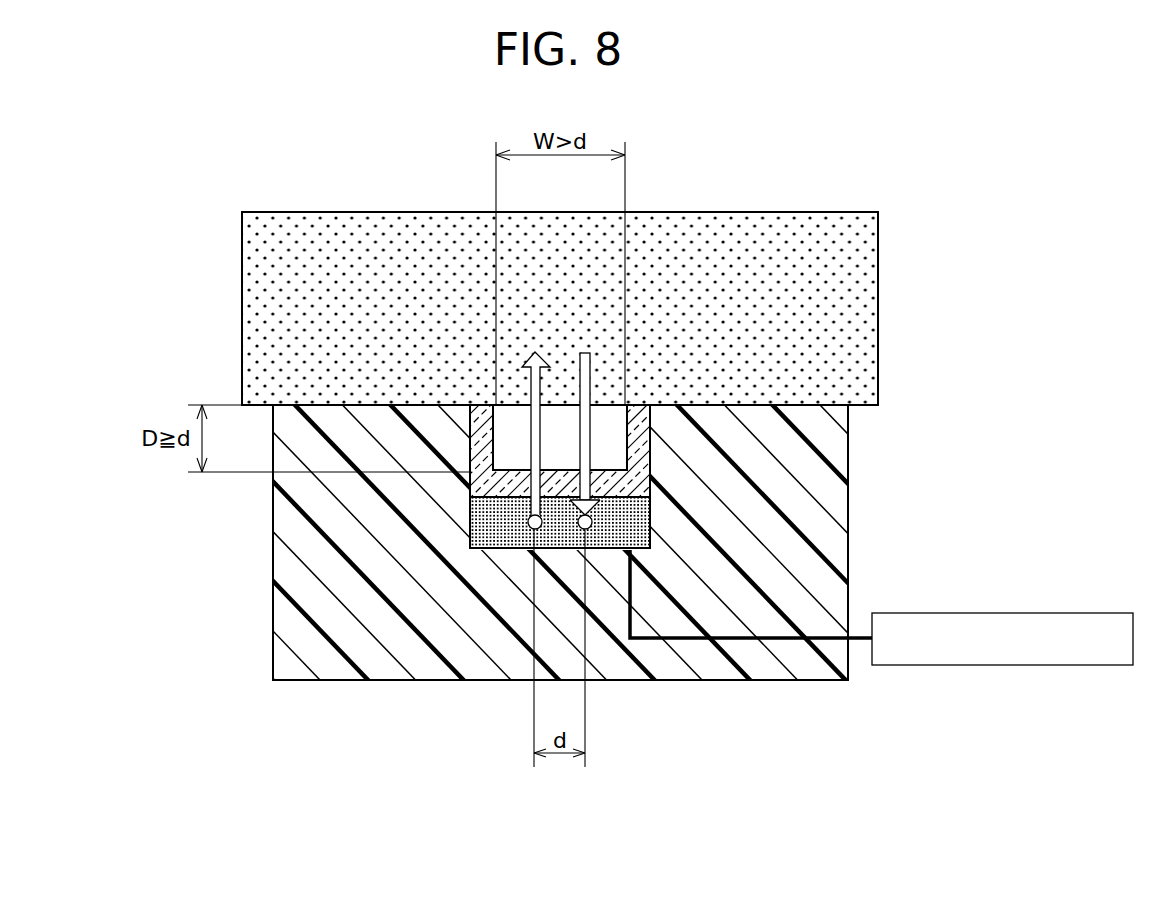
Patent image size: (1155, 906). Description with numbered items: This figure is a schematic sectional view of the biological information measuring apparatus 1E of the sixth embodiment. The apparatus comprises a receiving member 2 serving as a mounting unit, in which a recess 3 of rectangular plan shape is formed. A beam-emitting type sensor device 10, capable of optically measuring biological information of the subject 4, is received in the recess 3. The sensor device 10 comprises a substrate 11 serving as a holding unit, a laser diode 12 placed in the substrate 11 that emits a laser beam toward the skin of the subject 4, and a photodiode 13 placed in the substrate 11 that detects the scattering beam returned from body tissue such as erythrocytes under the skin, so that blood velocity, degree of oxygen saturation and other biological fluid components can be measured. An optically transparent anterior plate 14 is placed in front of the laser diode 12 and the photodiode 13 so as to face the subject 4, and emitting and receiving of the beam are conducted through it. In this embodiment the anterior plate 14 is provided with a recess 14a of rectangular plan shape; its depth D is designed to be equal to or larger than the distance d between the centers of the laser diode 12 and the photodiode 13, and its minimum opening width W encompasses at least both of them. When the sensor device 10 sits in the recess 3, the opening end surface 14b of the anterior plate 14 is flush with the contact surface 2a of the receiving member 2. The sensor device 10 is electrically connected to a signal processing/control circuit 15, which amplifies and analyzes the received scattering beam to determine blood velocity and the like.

The biological information measuring apparatus 1E is at (710, 698).
The receiving member 2 is at (835, 490).
The contact surface 2a is at (808, 403).
The recess 3 is at (650, 512).
The subject 4 is at (867, 301).
The beam-emitting type sensor device 10 is at (468, 547).
The substrate 11 is at (466, 539).
The laser diode 12 is at (527, 530).
The photodiode 13 is at (592, 530).
The anterior plate 14 is at (643, 470).
The recess 14a is at (493, 435).
The opening end surface 14b is at (638, 405).
The signal processing/control circuit 15 is at (965, 612).